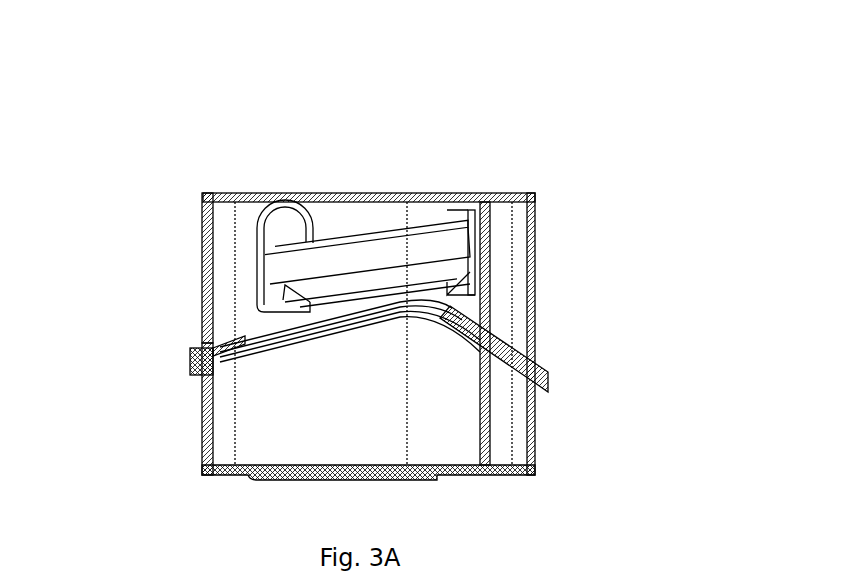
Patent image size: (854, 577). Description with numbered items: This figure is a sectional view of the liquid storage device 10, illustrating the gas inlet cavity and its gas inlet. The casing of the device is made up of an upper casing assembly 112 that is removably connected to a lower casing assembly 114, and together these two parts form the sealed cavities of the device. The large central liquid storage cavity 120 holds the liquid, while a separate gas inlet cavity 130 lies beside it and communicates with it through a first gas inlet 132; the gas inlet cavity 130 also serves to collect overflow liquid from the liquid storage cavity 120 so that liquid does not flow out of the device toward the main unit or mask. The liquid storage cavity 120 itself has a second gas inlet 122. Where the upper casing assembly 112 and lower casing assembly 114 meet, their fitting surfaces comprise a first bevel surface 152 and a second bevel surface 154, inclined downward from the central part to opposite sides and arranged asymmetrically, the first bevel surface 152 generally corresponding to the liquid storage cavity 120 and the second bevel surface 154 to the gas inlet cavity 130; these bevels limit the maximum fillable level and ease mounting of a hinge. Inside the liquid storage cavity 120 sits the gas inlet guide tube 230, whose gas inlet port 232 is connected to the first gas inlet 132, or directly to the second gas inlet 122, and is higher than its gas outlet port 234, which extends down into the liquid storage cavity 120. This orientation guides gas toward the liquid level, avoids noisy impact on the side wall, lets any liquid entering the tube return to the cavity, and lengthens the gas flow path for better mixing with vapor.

The liquid storage device 10 is at (297, 73).
The upper casing assembly 112 is at (207, 271).
The lower casing assembly 114 is at (205, 420).
The liquid storage cavity 120 is at (463, 445).
The second gas inlet 122 is at (530, 278).
The gas inlet cavity 130 is at (507, 266).
The first gas inlet 132 is at (487, 239).
The first bevel surface 152 is at (262, 335).
The second bevel surface 154 is at (533, 335).
The gas inlet guide tube 230 is at (367, 240).
The gas inlet port 232 is at (465, 243).
The gas outlet port 234 is at (285, 300).